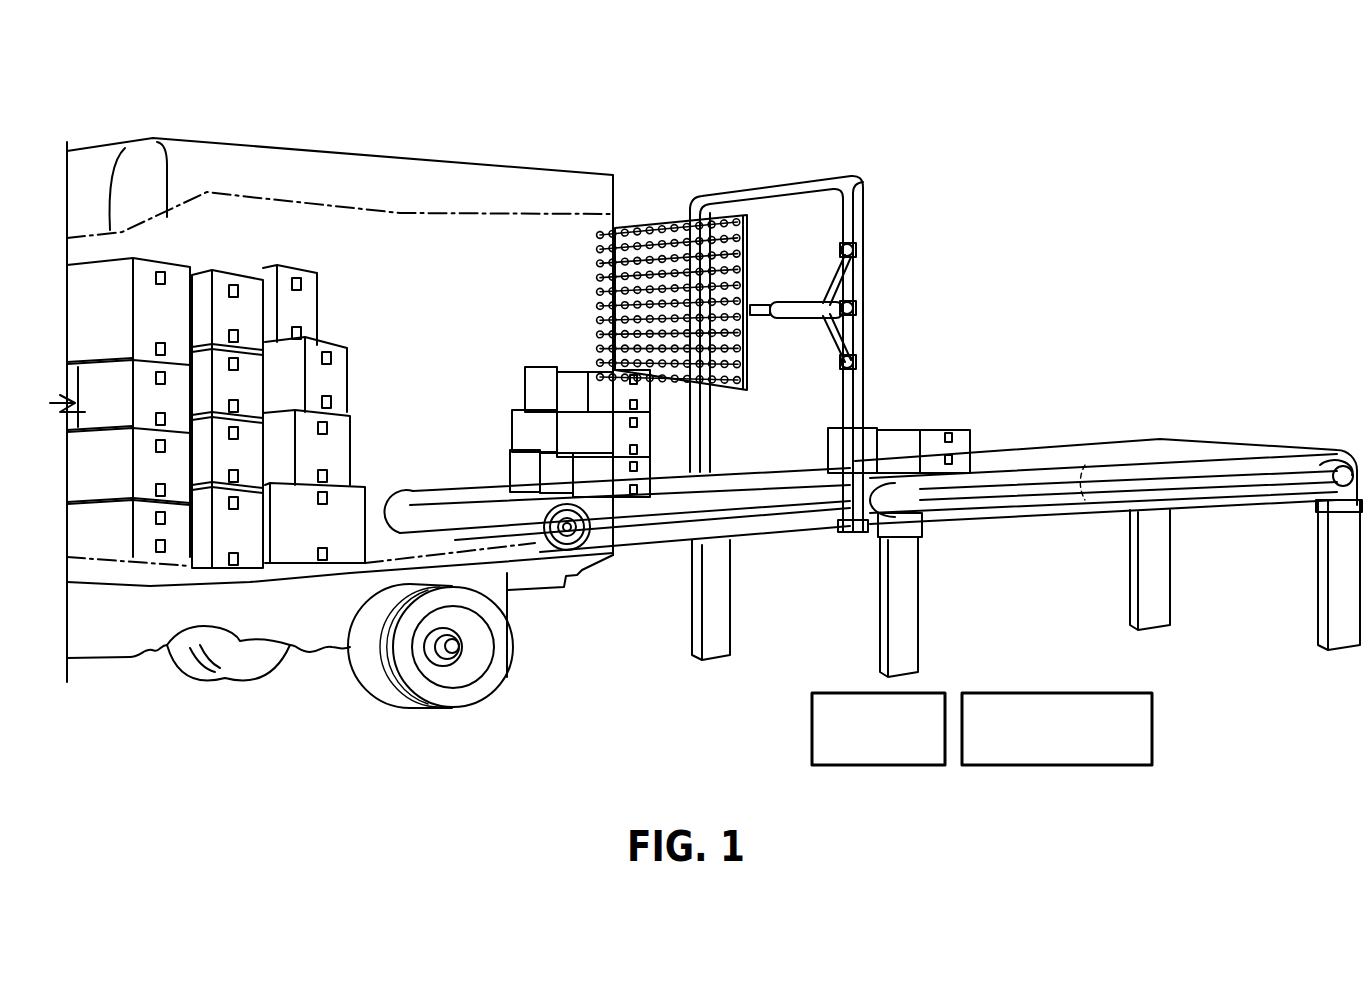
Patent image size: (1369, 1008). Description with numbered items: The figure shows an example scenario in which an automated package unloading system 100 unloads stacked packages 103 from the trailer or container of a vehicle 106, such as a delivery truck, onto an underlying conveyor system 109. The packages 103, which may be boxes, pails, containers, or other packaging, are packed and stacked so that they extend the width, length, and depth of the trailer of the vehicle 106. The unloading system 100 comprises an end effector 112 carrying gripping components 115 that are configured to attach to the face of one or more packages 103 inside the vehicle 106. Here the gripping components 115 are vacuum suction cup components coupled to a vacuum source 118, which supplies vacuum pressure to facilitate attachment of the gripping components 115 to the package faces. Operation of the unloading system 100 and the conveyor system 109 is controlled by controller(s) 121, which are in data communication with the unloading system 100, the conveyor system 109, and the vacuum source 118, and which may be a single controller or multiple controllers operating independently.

The automated package unloading system 100 is at (844, 130).
The packages 103 is at (375, 277).
The vehicle 106 is at (333, 170).
The conveyor system 109 is at (931, 527).
The end effector 112 is at (746, 268).
The gripping components 115 is at (603, 235).
The vacuum source 118 is at (822, 765).
The controller(s) 121 is at (1068, 763).